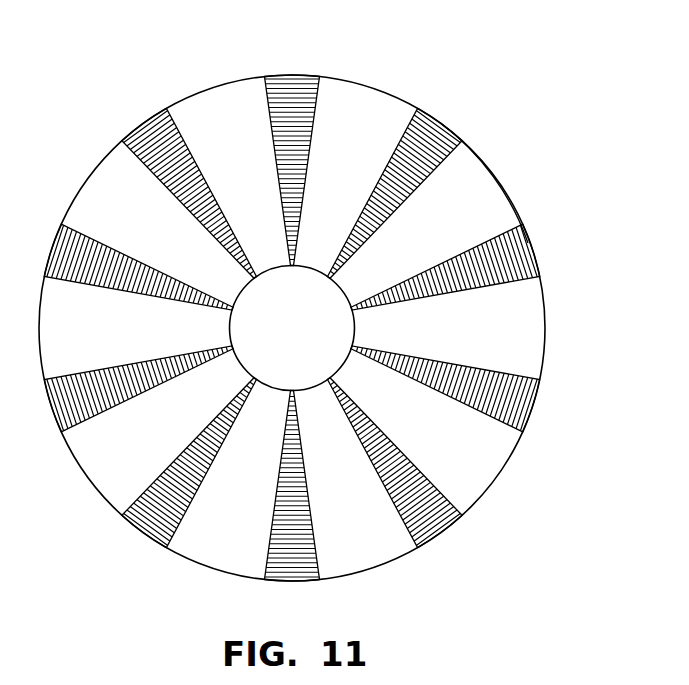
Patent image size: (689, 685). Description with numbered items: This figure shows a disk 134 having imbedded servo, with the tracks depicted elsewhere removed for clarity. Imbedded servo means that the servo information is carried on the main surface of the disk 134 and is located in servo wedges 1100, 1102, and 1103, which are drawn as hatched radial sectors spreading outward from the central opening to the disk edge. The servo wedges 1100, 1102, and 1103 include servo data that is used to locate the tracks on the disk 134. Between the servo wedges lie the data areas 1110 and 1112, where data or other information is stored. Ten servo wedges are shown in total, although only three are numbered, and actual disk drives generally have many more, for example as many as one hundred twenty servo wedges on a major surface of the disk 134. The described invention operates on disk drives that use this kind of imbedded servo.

The disk 134 is at (98, 83).
The servo wedge 1100 is at (523, 405).
The servo wedge 1102 is at (528, 248).
The servo wedge 1103 is at (433, 136).
The data area 1110 is at (530, 328).
The data area 1112 is at (485, 186).